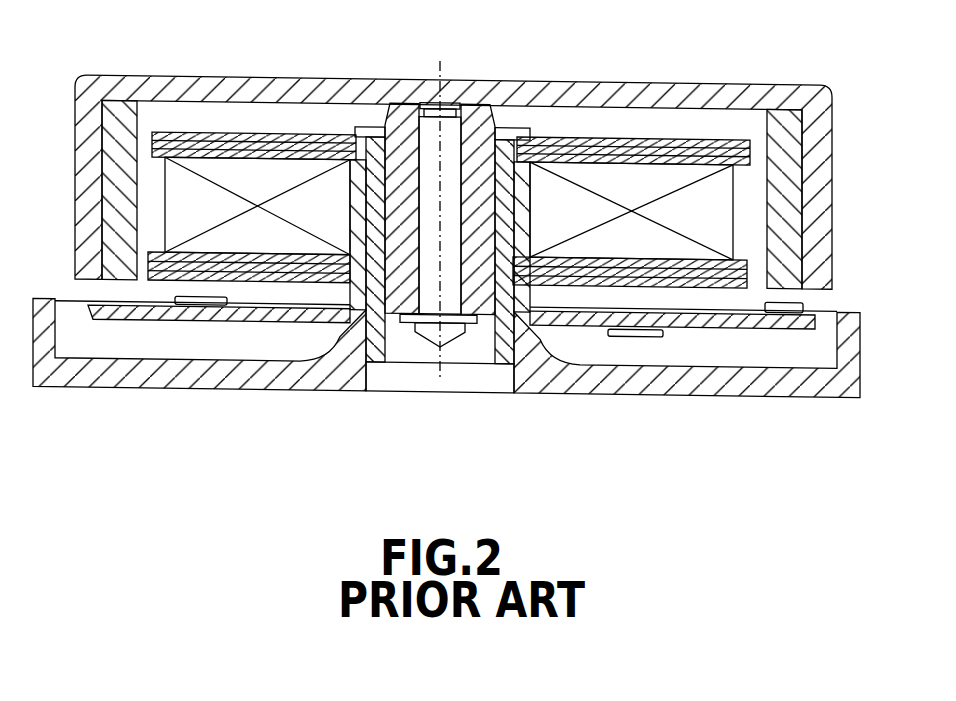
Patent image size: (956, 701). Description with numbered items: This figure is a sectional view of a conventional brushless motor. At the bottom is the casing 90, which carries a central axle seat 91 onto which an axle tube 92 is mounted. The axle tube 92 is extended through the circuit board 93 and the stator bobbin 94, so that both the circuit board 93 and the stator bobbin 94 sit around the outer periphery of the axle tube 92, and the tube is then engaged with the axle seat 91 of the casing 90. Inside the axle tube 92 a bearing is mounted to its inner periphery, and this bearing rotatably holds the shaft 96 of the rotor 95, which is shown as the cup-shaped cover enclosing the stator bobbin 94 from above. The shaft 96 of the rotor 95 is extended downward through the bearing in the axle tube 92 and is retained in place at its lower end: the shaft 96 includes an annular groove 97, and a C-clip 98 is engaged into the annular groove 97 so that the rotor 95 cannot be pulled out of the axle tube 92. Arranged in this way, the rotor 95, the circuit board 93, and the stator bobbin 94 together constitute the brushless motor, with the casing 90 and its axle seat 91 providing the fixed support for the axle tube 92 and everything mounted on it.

The casing 90 is at (178, 375).
The axle seat 91 is at (530, 300).
The axle tube 92 is at (512, 130).
The circuit board 93 is at (714, 320).
The stator bobbin 94 is at (244, 130).
The rotor 95 is at (635, 86).
The shaft 96 is at (433, 100).
The annular groove 97 is at (476, 396).
The C-clip 98 is at (463, 325).